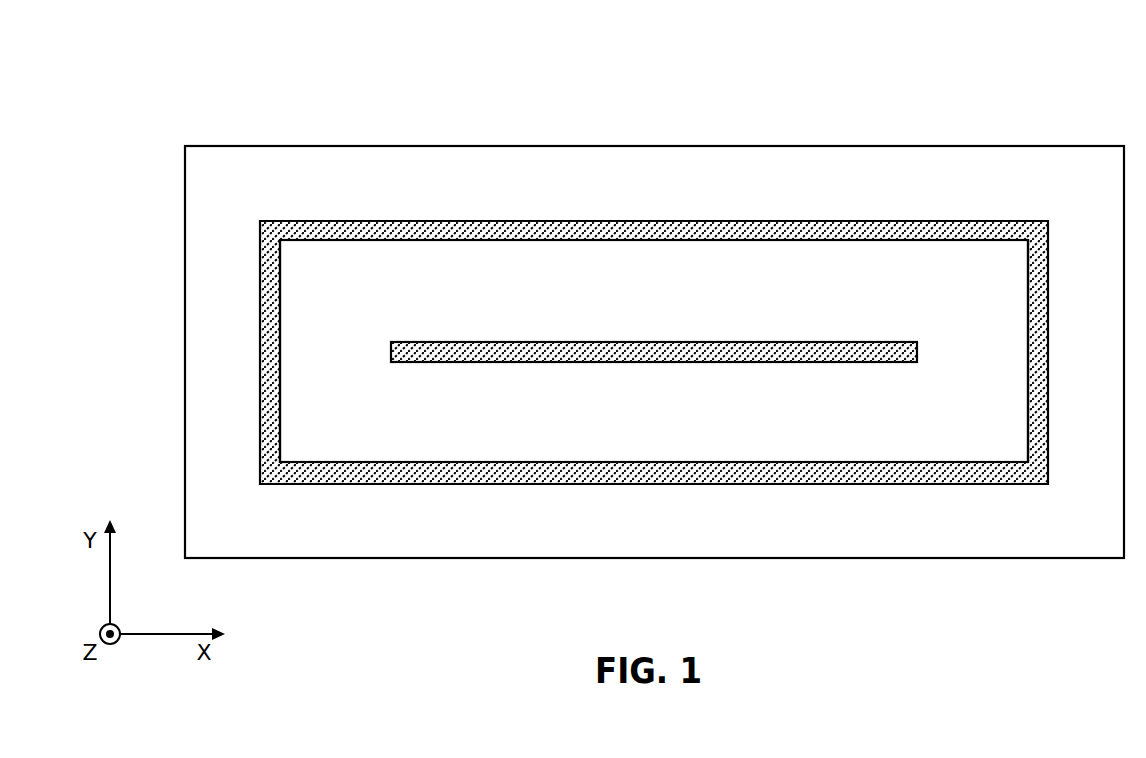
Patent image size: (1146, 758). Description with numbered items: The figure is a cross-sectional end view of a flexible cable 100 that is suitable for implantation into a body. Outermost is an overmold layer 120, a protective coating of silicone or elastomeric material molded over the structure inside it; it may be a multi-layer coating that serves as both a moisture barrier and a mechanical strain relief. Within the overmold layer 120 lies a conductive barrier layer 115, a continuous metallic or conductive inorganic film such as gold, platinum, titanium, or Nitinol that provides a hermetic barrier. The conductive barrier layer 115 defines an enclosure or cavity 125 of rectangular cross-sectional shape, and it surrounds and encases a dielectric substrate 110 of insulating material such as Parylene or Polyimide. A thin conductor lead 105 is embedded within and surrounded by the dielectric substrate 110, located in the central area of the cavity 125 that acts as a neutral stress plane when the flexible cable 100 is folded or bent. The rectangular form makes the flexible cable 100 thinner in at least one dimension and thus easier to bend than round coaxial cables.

The flexible cable 100 is at (1080, 74).
The conductor lead 105 is at (881, 342).
The dielectric substrate 110 is at (365, 304).
The conductive barrier layer 115 is at (847, 221).
The overmold layer 120 is at (266, 192).
The cavity 125 is at (1013, 248).